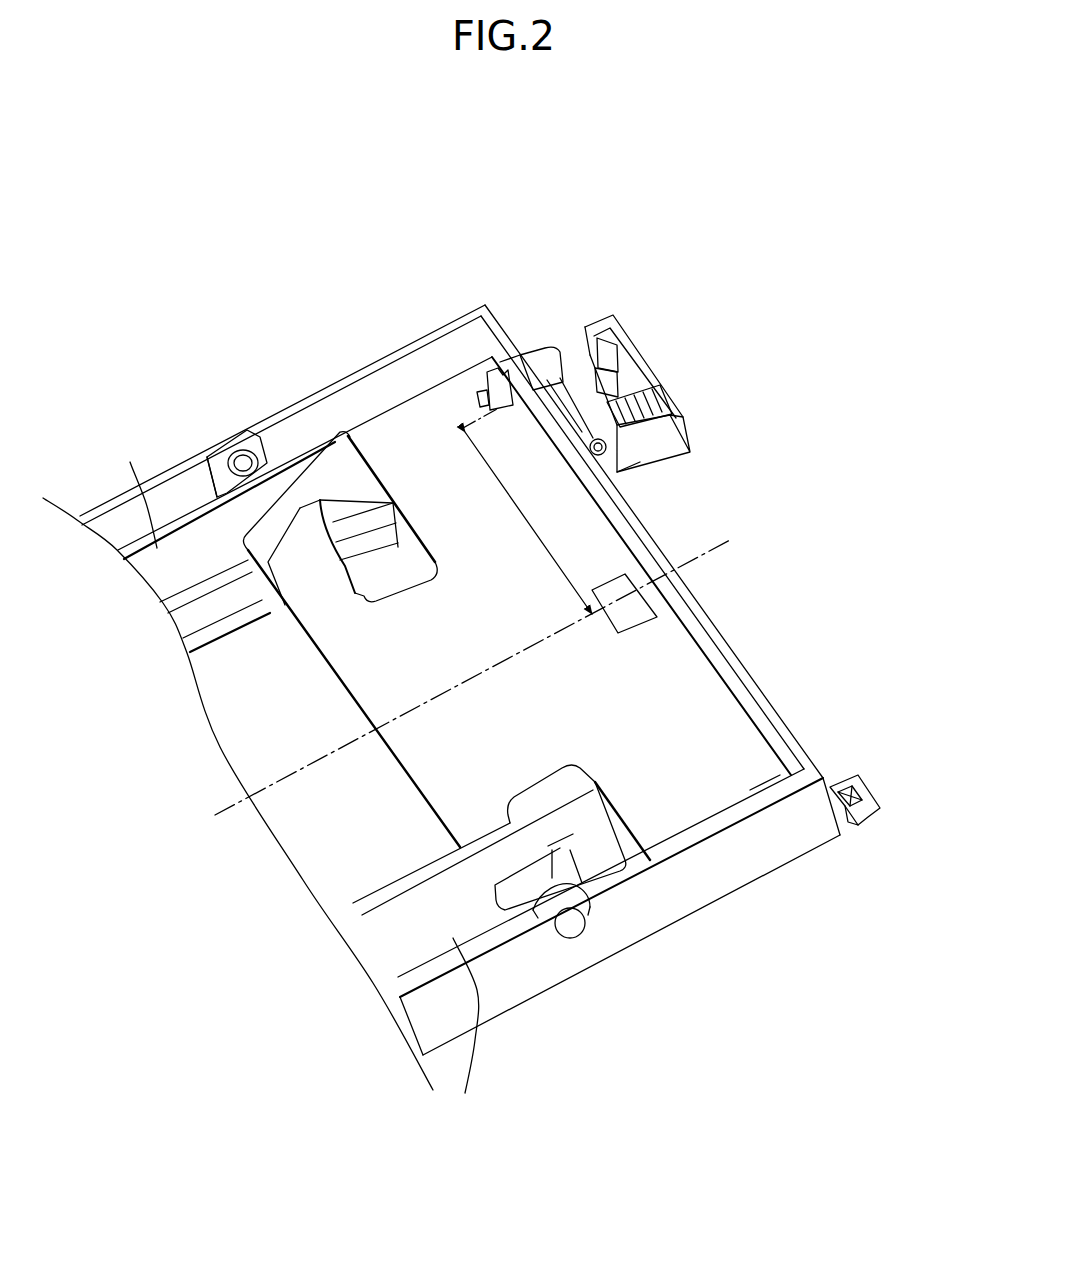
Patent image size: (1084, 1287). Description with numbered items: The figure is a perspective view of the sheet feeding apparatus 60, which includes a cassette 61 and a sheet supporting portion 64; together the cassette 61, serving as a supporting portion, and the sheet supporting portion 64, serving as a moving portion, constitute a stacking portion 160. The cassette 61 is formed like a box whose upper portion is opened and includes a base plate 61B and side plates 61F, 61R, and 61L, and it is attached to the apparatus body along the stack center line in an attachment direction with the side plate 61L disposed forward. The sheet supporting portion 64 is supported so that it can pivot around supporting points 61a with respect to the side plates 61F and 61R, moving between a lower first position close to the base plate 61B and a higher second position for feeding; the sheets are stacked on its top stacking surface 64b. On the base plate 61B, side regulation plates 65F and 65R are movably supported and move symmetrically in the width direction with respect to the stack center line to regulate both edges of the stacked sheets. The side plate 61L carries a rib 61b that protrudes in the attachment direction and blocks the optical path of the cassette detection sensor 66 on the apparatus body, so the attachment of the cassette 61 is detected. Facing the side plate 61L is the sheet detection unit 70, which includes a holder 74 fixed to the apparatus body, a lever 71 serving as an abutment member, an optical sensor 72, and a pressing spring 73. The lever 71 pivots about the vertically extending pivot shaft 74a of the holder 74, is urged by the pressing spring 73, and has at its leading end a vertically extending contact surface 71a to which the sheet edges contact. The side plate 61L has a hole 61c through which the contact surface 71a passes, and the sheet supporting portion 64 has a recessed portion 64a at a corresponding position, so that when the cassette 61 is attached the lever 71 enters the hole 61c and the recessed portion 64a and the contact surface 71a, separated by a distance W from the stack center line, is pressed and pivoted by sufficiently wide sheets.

The sheet feeding apparatus 60 is at (742, 497).
The cassette 61 is at (780, 878).
The side plate 61F is at (370, 388).
The side plate 61L is at (707, 620).
The side plate 61R is at (692, 898).
The base plate 61B is at (615, 873).
The supporting points 61a is at (237, 458).
The rib 61b is at (858, 783).
The hole 61c is at (490, 385).
The sheet supporting portion 64 is at (728, 720).
The recessed portion 64a is at (466, 428).
The stacking surface 64b is at (735, 790).
The side regulation plate 65F is at (225, 543).
The side regulation plate 65R is at (473, 959).
The cassette detection sensor 66 is at (872, 800).
The sheet detection unit 70 is at (592, 303).
The lever 71 is at (542, 358).
The contact surface 71a is at (500, 362).
The optical sensor 72 is at (608, 328).
The pressing spring 73 is at (648, 405).
The holder 74 is at (677, 433).
The pivot shaft 74a is at (633, 443).
The stacking portion 160 is at (404, 793).